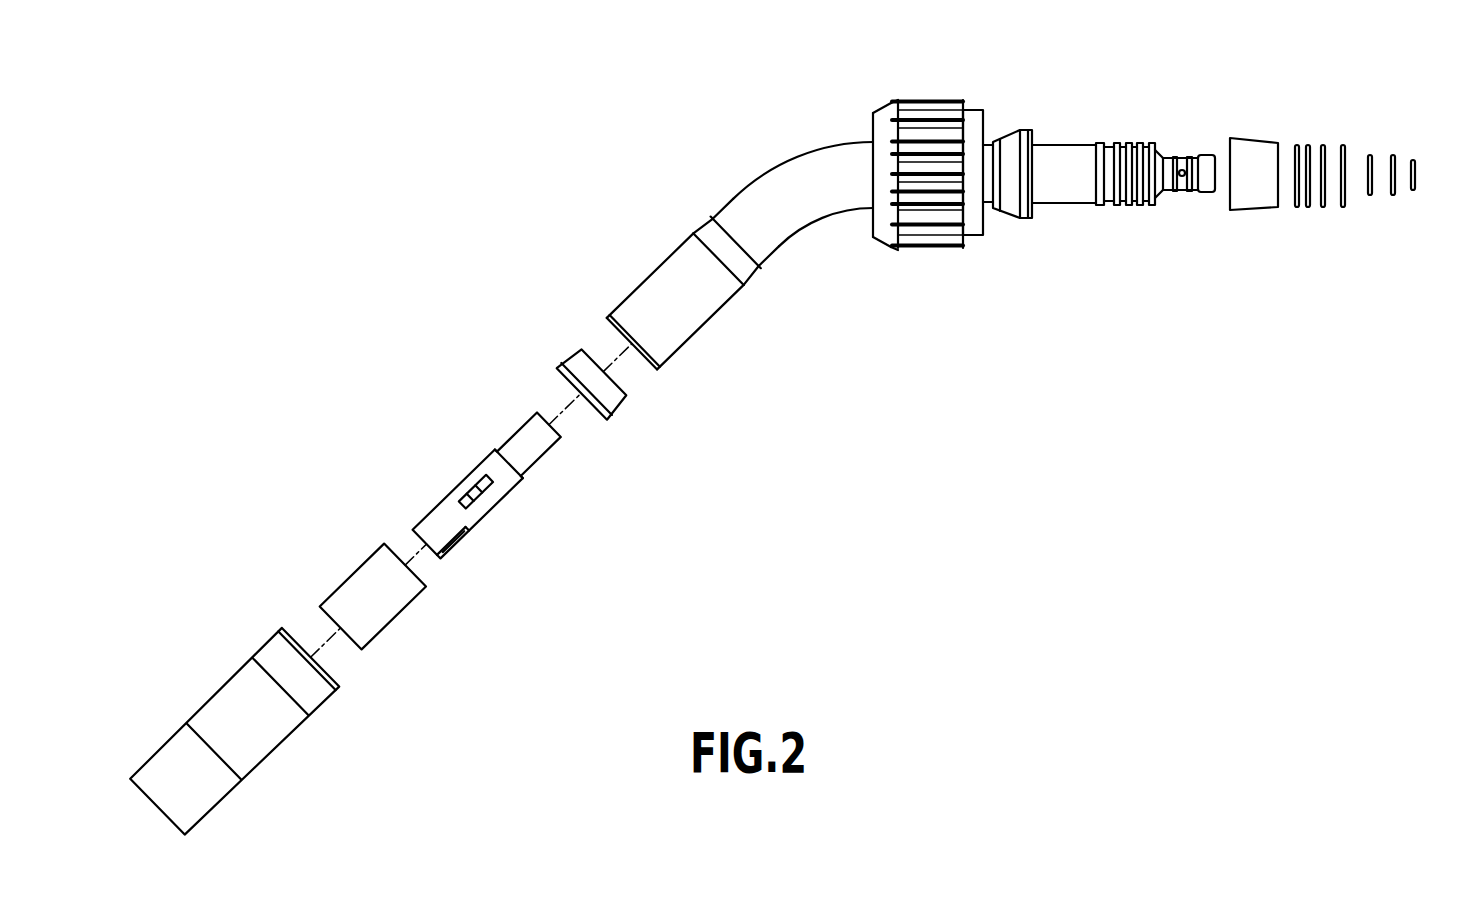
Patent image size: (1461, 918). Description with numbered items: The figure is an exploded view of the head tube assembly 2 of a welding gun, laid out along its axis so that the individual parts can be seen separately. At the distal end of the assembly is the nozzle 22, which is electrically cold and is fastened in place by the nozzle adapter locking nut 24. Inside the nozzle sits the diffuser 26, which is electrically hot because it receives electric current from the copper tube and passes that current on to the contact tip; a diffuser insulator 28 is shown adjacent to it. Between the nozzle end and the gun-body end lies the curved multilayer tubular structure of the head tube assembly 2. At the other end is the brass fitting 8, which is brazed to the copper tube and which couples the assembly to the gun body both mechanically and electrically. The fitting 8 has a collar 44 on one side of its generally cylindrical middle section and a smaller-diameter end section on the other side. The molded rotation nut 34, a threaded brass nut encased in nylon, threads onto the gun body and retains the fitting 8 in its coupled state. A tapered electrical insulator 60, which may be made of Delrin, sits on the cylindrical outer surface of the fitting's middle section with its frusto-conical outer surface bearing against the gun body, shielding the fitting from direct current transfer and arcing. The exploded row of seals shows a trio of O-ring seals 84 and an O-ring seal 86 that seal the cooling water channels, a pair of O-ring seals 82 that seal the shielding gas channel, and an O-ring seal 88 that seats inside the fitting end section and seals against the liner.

The head tube assembly 2 is at (824, 100).
The fitting 8 is at (1063, 197).
The nozzle 22 is at (268, 762).
The nozzle adapter locking nut 24 is at (407, 628).
The diffuser 26 is at (500, 507).
The diffuser insulator 28 is at (623, 397).
The rotation nut 34 is at (938, 258).
The collar 44 is at (1023, 133).
The electrical insulator 60 is at (1248, 210).
The O-ring seals 82 is at (1393, 195).
The O-ring seals 84 is at (1343, 207).
The O-ring seal 86 is at (1325, 145).
The O-ring seal 88 is at (1413, 160).